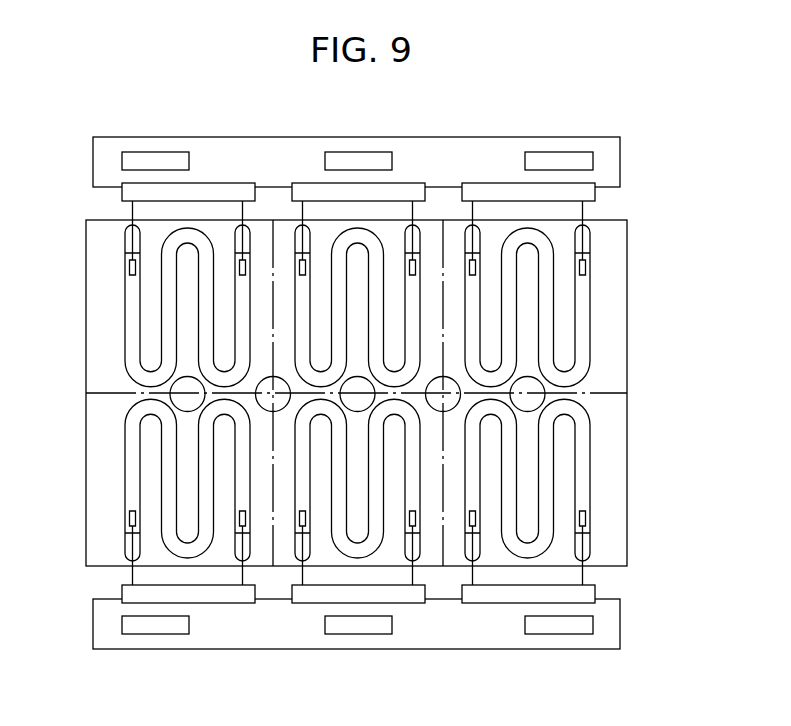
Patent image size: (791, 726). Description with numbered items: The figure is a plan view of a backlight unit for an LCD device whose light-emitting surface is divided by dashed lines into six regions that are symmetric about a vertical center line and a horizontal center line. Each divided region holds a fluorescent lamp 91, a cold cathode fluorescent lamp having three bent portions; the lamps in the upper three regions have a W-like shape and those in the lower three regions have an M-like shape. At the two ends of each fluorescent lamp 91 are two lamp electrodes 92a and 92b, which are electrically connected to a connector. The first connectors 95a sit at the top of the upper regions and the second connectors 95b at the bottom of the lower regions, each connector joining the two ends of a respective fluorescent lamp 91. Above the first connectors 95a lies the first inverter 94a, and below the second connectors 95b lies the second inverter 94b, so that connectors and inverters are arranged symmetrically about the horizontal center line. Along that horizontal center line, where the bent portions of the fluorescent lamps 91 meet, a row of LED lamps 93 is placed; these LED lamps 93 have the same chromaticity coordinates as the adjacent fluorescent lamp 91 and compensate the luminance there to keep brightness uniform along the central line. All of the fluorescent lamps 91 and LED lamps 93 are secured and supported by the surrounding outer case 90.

The outer case 90 is at (613, 427).
The fluorescent lamp 91 is at (583, 343).
The lamp electrode 92a is at (586, 268).
The lamp electrode 92b is at (476, 270).
The LED lamp 93 is at (540, 387).
The first inverter 94a is at (418, 147).
The second inverter 94b is at (417, 640).
The first connector 95a is at (307, 195).
The second connector 95b is at (305, 593).